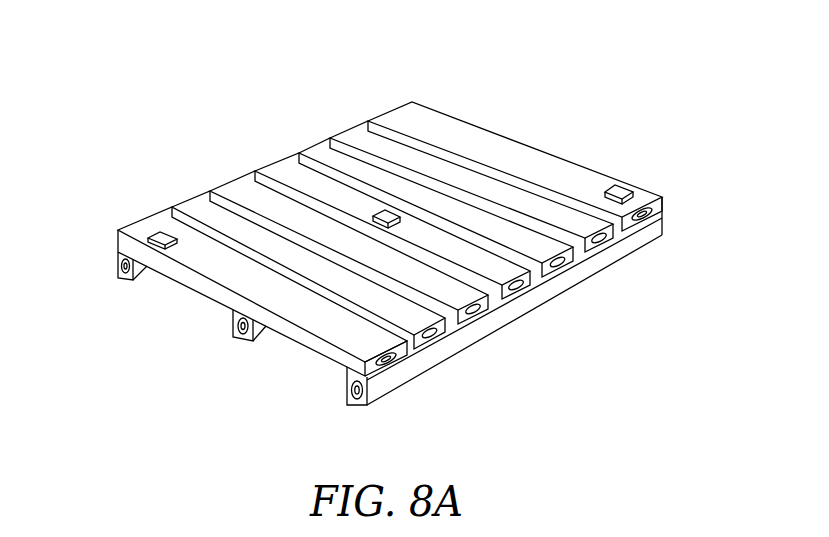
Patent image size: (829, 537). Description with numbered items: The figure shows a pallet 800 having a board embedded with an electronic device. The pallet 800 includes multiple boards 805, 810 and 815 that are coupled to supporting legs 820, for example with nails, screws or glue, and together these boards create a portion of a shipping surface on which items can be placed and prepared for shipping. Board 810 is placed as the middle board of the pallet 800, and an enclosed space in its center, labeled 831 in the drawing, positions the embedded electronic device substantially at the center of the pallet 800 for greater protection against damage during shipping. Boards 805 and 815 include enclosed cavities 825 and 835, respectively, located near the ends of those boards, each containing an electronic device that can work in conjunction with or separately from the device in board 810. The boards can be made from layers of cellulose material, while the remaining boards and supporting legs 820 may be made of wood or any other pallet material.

The pallet 800 is at (552, 90).
The board 805 is at (661, 221).
The board 810 is at (520, 292).
The board 815 is at (390, 368).
The supporting legs 820 is at (118, 278).
The enclosed cavity 825 is at (161, 229).
The sensor 831 is at (380, 208).
The enclosed cavity 835 is at (622, 187).